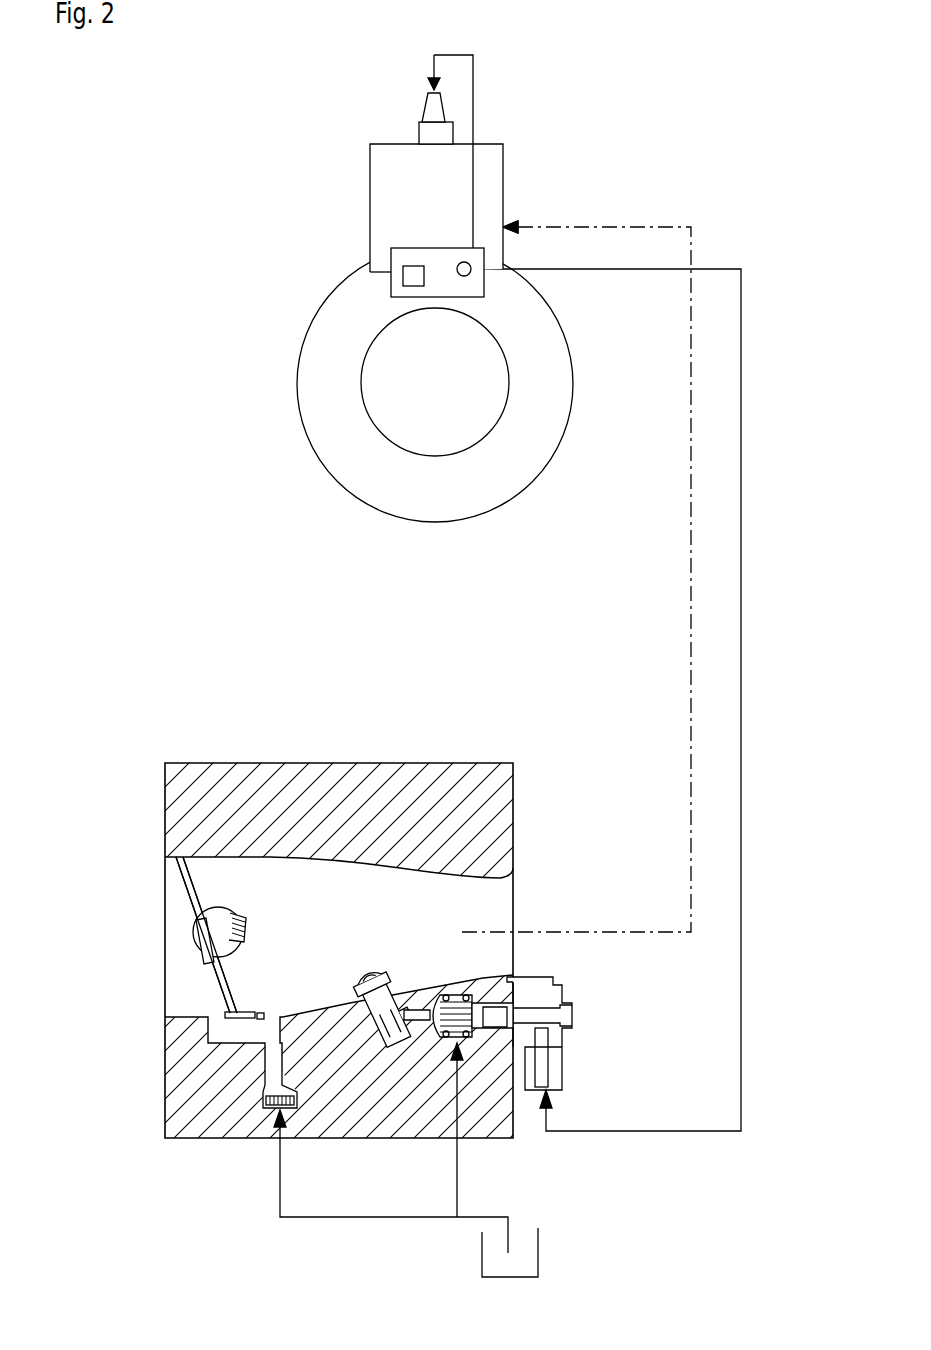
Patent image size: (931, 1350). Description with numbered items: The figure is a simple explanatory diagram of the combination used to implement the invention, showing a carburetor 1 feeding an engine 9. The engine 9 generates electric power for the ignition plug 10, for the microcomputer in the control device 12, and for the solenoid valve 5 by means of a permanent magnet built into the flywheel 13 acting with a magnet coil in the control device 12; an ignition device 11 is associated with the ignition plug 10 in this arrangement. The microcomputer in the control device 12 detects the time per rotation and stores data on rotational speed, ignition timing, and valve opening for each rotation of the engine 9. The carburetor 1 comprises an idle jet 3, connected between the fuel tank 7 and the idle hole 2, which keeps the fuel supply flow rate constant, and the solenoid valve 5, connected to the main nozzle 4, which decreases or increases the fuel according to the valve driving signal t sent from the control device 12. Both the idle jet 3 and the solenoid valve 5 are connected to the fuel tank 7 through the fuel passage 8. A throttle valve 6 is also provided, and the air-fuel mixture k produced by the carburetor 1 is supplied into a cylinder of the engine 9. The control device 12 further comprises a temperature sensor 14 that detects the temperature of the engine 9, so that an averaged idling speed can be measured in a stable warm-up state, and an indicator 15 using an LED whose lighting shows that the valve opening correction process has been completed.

The carburetor 1 is at (180, 798).
The idle hole 2 is at (227, 1017).
The idle jet 3 is at (270, 1090).
The main nozzle 4 is at (393, 993).
The solenoid valve 5 is at (545, 1017).
The throttle valve 6 is at (212, 920).
The fuel tank 7 is at (538, 1251).
The fuel passage 8 is at (415, 1217).
The engine 9 is at (380, 172).
The ignition plug 10 is at (432, 103).
The ignition device 11 is at (392, 248).
The control device 12 is at (392, 288).
The flywheel 13 is at (408, 450).
The temperature sensor 14 is at (392, 273).
The indicator 15 is at (488, 266).
The valve driving signal t is at (741, 402).
The air-fuel mixture k is at (691, 568).